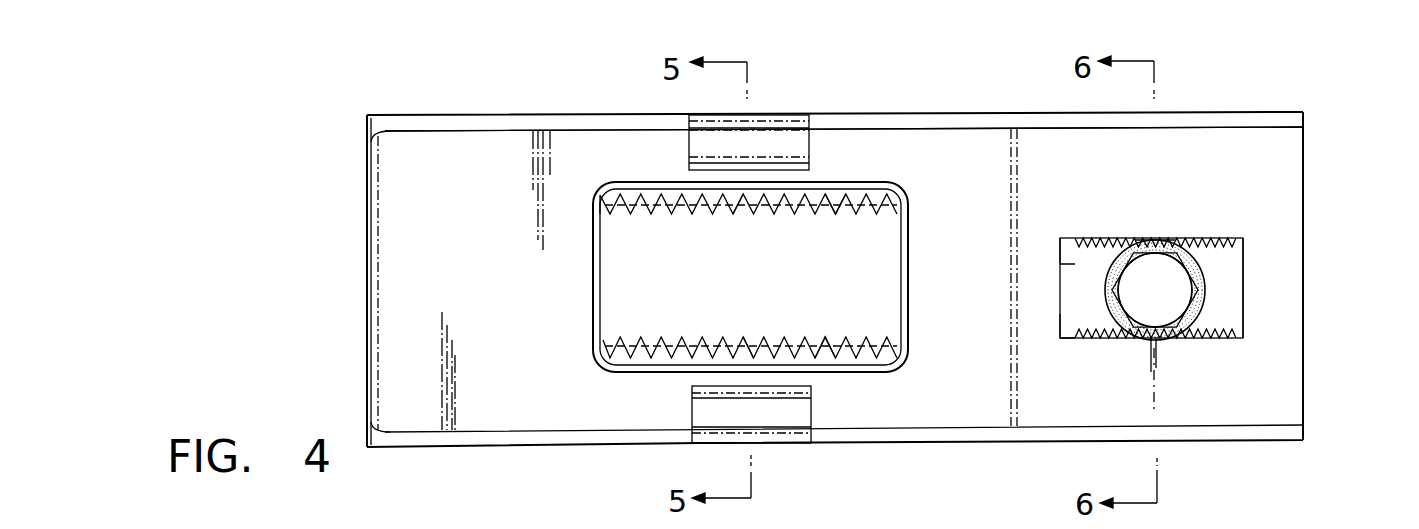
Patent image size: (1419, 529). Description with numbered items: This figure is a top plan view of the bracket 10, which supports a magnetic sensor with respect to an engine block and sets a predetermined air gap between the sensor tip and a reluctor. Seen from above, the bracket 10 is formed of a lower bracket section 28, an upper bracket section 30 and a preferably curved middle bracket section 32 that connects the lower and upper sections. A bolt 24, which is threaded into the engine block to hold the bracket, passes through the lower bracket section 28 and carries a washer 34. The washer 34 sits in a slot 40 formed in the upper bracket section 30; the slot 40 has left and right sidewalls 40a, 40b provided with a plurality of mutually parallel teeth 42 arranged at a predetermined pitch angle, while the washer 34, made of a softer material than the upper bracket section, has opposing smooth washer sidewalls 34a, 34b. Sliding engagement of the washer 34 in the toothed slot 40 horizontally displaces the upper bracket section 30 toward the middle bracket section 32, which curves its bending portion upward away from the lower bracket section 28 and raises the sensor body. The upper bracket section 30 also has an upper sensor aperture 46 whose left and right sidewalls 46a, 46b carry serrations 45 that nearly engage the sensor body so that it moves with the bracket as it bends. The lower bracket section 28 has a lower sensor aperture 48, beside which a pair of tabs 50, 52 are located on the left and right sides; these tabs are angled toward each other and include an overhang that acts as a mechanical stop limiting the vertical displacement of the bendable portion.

The bracket 10 is at (1303, 94).
The bolt 24 is at (1178, 302).
The lower bracket section 28 is at (1303, 352).
The upper bracket section 30 is at (1283, 263).
The middle bracket section 32 is at (365, 275).
The washer 34 is at (1113, 266).
The washer sidewall 34a is at (1153, 240).
The washer sidewall 34b is at (1147, 365).
The slot 40 is at (1206, 260).
The left sidewall of slot 40a is at (1066, 263).
The right sidewall of slot 40b is at (1061, 318).
The teeth 42 is at (1243, 262).
The serrations 45 is at (745, 338).
The upper sensor aperture 46 is at (682, 340).
The left sidewall of upper sensor aperture 46a is at (830, 342).
The right sidewall of upper sensor aperture 46b is at (840, 214).
The lower sensor aperture 48 is at (840, 357).
The tab 50 is at (788, 442).
The tab 52 is at (770, 115).